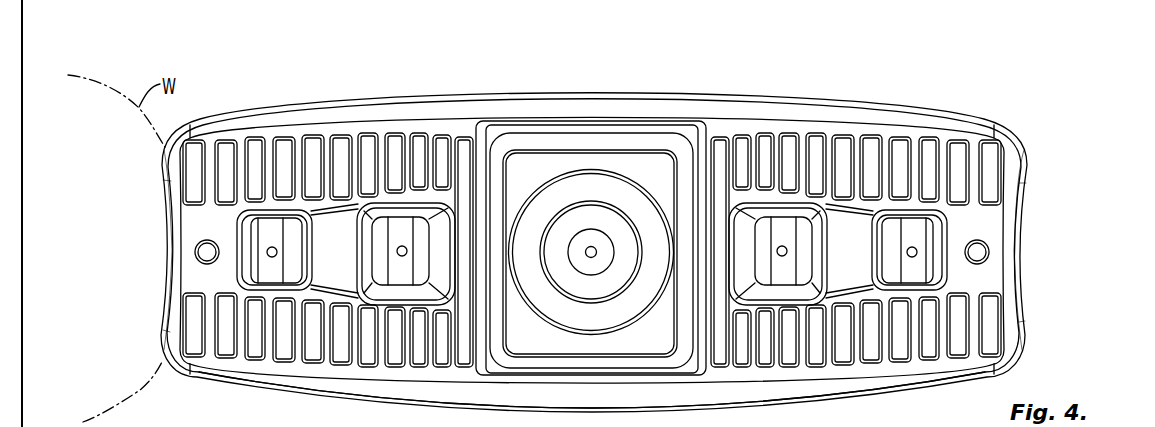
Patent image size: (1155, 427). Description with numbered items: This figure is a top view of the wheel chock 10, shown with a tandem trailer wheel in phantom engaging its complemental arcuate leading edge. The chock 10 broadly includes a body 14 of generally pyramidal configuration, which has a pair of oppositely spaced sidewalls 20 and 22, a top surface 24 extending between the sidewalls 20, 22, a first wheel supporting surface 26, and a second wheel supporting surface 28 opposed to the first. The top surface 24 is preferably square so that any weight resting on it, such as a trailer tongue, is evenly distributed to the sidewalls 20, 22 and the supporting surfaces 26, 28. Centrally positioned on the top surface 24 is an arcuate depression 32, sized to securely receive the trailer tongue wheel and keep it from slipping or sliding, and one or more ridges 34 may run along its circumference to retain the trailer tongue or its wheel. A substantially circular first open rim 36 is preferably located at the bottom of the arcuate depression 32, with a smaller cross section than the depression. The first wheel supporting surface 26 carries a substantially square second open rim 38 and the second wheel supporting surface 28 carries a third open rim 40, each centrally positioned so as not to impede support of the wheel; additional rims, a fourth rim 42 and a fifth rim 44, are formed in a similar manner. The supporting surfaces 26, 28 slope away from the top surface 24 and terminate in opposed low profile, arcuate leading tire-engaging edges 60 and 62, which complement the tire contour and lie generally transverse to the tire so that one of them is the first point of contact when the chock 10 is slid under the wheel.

The wheel chock 10 is at (1049, 123).
The body 14 is at (1050, 341).
The sidewall 20 is at (640, 374).
The sidewall 22 is at (538, 117).
The top surface 24 is at (623, 160).
The first wheel supporting surface 26 is at (197, 278).
The second wheel supporting surface 28 is at (990, 278).
The arcuate depression 32 is at (558, 195).
The ridge 34 is at (667, 143).
The first open rim 36 is at (612, 277).
The second open rim 38 is at (380, 245).
The third open rim 40 is at (806, 243).
The fourth rim 42 is at (254, 236).
The fifth rim 44 is at (932, 240).
The first leading tire-engaging edge 60 is at (160, 177).
The second leading tire-engaging edge 62 is at (1028, 177).